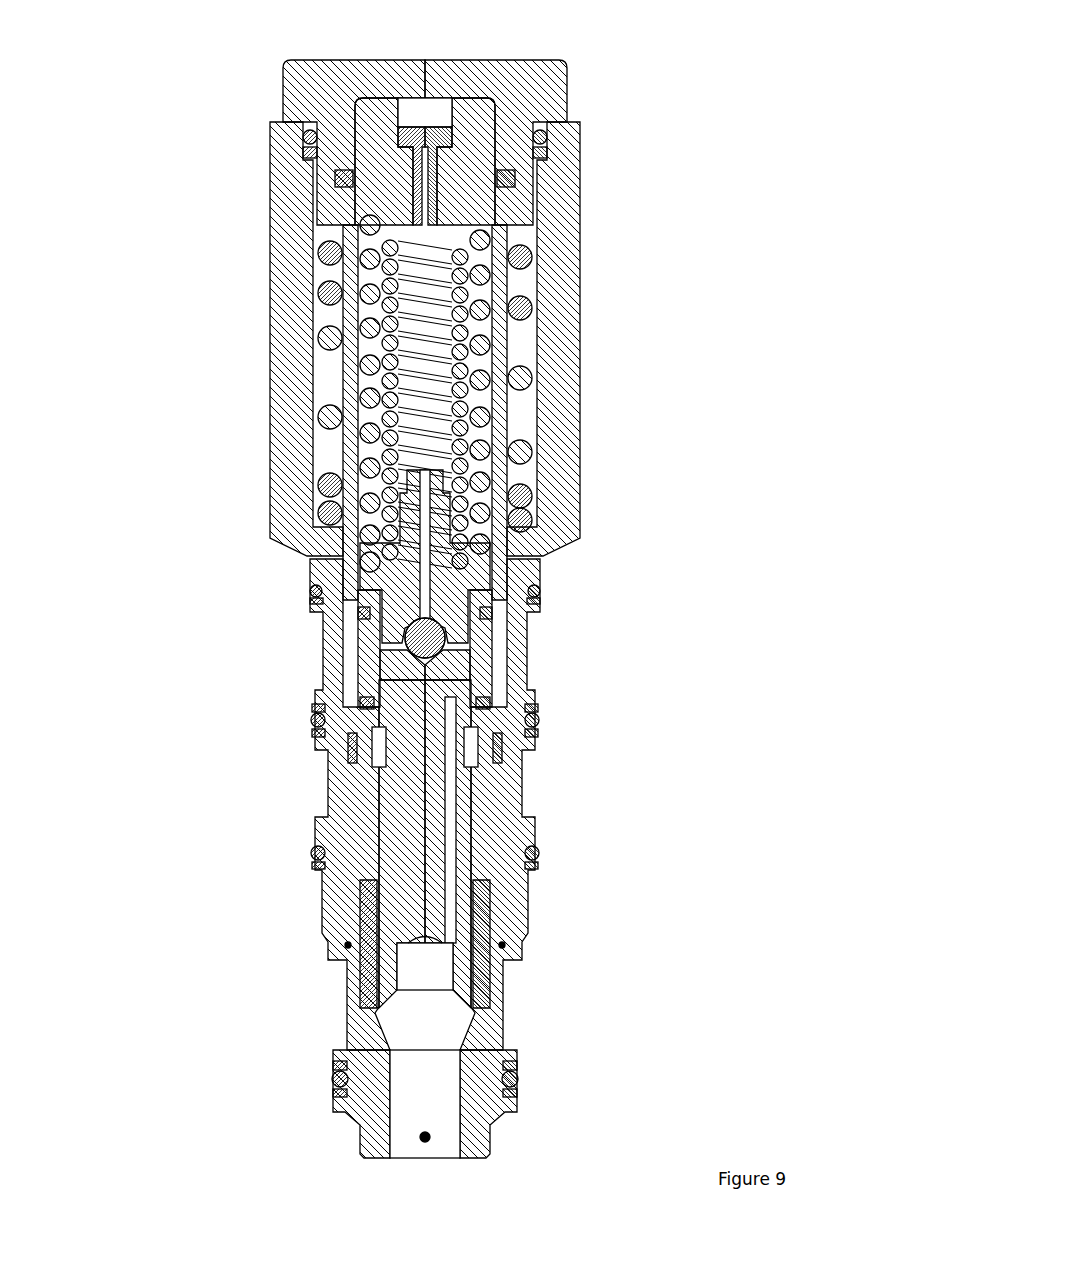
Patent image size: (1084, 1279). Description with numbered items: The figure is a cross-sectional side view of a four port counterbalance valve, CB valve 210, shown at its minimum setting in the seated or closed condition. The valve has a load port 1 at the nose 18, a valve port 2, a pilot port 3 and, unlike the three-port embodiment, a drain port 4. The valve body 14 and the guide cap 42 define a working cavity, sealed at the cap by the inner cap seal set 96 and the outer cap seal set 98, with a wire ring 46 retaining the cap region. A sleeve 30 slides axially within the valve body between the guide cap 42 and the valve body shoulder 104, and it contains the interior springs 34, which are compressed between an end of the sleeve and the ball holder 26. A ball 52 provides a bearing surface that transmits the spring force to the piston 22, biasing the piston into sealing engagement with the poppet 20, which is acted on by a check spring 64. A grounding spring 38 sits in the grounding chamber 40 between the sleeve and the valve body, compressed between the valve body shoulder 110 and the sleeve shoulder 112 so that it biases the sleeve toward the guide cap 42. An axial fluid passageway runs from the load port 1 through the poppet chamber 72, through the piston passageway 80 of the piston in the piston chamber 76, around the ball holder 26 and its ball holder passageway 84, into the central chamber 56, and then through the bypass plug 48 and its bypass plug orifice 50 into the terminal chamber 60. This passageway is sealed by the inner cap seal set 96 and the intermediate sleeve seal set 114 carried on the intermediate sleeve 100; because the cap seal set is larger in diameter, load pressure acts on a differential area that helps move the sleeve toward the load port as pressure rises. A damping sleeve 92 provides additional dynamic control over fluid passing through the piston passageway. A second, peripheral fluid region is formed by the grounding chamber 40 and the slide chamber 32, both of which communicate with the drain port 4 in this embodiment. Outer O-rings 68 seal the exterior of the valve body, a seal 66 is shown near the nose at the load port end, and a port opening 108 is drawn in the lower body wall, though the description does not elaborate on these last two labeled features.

The guide cap 42 is at (560, 68).
The valve body 14 is at (560, 250).
The inner cap seal set 96 is at (545, 176).
The terminal chamber 60 is at (417, 123).
The wire ring 46 is at (437, 200).
The bypass plug 48 is at (303, 140).
The outer cap seal set 98 is at (548, 135).
The bypass plug orifice 50 is at (340, 180).
The sleeve 30 is at (345, 233).
The grounding spring 38 is at (350, 290).
The sleeve shoulder 112 is at (328, 267).
The grounding chamber 40 is at (330, 450).
The valve body shoulder for grounding spring 110 is at (330, 505).
The central chamber 56 is at (370, 345).
The interior springs 34 is at (400, 355).
The ball holder passageway 84 is at (470, 540).
The damping sleeve 92 is at (455, 655).
The piston passageway 80 is at (480, 920).
The piston chamber 76 is at (417, 974).
The intermediate sleeve 100 is at (500, 870).
The slide chamber 32 is at (330, 630).
The piston 22 is at (345, 915).
The port 108 is at (538, 832).
The poppet 20 is at (500, 1120).
The poppet chamber 72 is at (417, 1099).
The check spring 64 is at (490, 1158).
The seal 66 is at (340, 1100).
The outer O-ring 68 is at (312, 720).
The intermediate sleeve seal set 114 is at (316, 590).
The ball 52 is at (540, 608).
The valve body shoulder 104 is at (347, 672).
The ball holder 26 is at (343, 565).
The drain port 4 is at (315, 643).
The pilot port 3 is at (315, 775).
The valve port 2 is at (333, 991).
The load port 1 is at (425, 1150).
The nose 18 is at (340, 1165).
The CB valve 210 is at (670, 800).